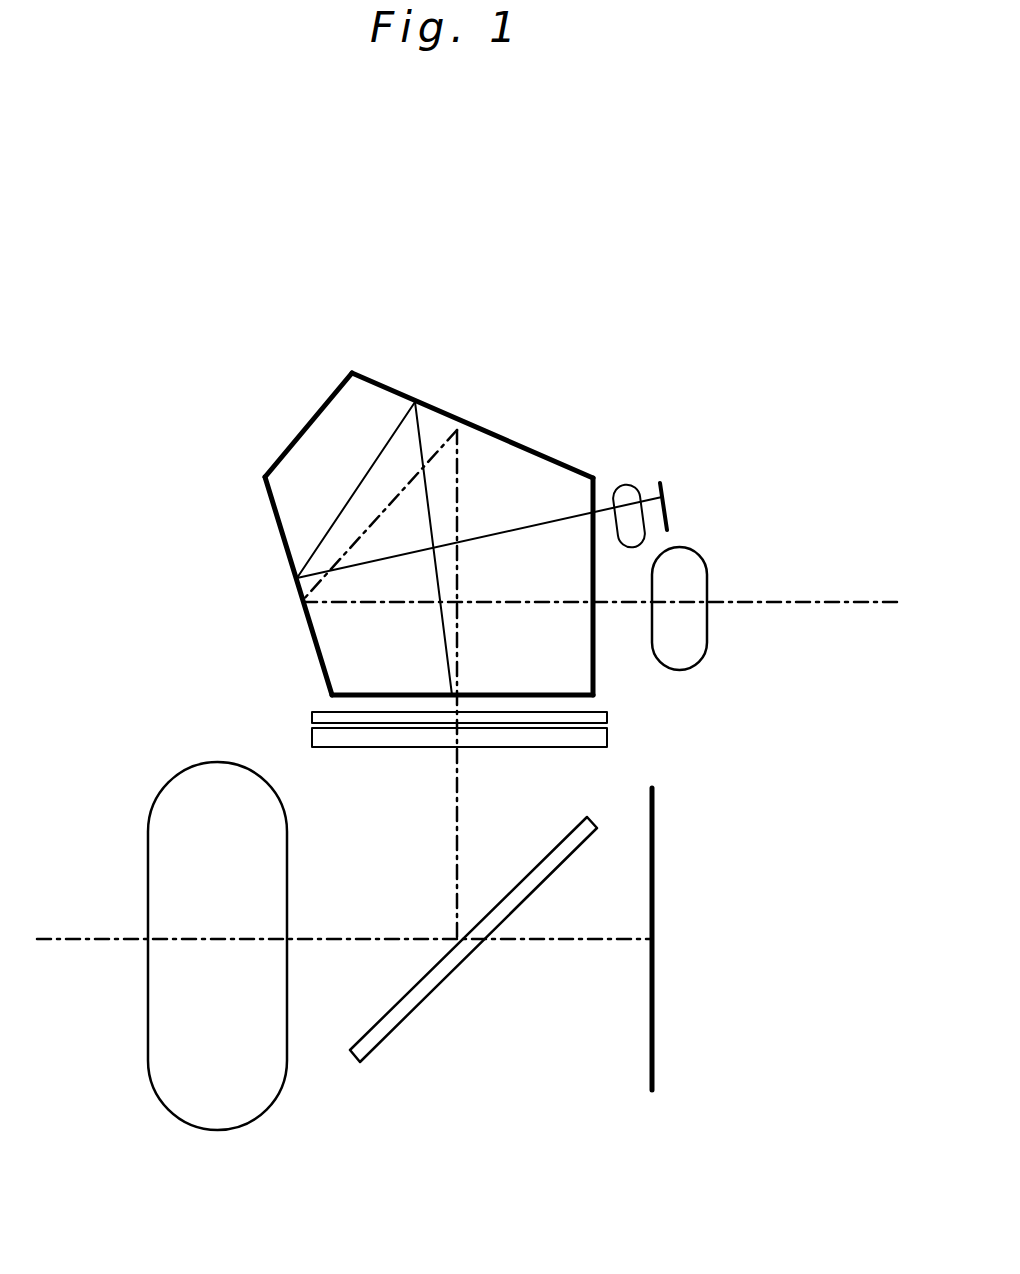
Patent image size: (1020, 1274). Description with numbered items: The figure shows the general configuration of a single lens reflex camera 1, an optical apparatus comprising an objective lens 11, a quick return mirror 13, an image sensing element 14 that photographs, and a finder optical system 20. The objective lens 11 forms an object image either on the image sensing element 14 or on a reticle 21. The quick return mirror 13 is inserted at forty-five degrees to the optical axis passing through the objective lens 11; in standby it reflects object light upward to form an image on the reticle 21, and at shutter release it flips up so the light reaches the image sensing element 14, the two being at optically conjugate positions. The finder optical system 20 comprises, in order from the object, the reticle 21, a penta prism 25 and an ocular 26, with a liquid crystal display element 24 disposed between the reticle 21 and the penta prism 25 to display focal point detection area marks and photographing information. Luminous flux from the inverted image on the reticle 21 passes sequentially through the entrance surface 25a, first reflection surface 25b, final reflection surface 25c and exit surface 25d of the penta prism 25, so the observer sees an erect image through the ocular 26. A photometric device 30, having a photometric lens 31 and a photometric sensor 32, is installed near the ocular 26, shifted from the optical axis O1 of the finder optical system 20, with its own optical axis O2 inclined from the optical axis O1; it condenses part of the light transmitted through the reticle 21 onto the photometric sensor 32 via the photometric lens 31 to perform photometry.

The single lens reflex camera 1 is at (134, 289).
The objective lens 11 is at (155, 1038).
The quick return mirror 13 is at (430, 983).
The image sensing element 14 is at (653, 1043).
The finder optical system 20 is at (226, 594).
The reticle 21 is at (595, 735).
The liquid crystal display element 24 is at (607, 715).
The penta prism 25 is at (451, 546).
The entrance surface 25a is at (337, 703).
The first reflection surface 25b is at (493, 423).
The final reflection surface 25c is at (303, 618).
The exit surface 25d is at (597, 677).
The ocular 26 is at (685, 565).
The photometric device 30 is at (613, 386).
The photometric lens 31 is at (622, 493).
The photometric sensor 32 is at (670, 490).
The optical axis of the finder optical system O1 is at (513, 606).
The optical axis of the photometric device O2 is at (508, 530).